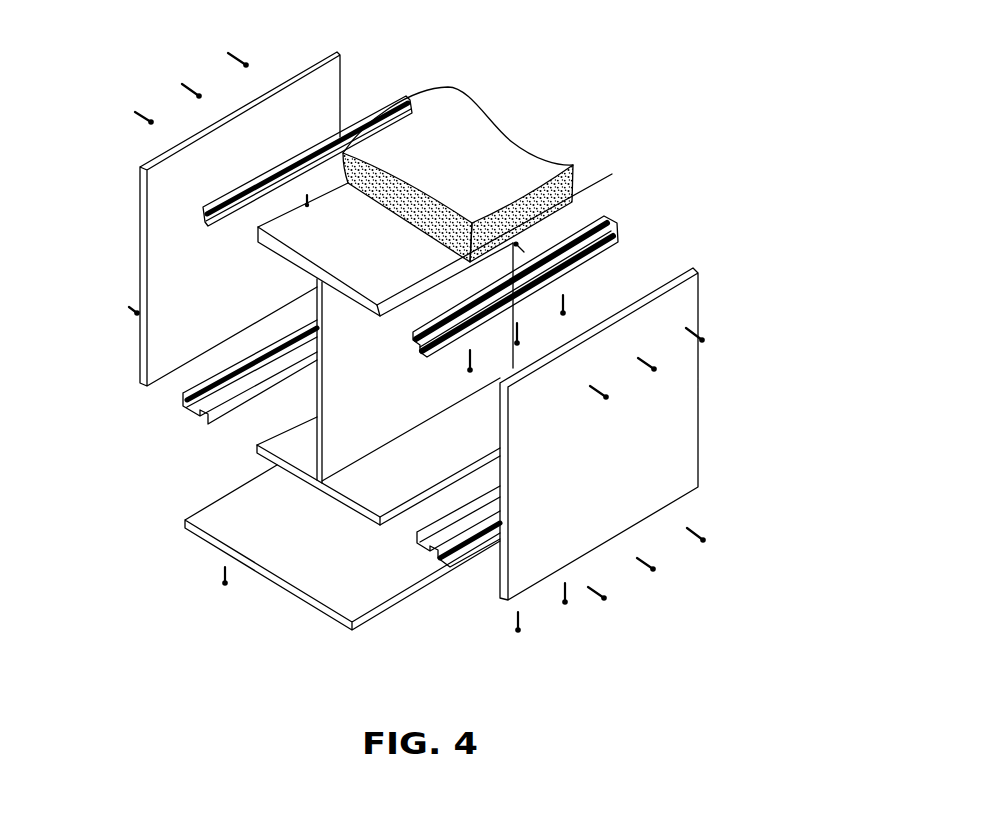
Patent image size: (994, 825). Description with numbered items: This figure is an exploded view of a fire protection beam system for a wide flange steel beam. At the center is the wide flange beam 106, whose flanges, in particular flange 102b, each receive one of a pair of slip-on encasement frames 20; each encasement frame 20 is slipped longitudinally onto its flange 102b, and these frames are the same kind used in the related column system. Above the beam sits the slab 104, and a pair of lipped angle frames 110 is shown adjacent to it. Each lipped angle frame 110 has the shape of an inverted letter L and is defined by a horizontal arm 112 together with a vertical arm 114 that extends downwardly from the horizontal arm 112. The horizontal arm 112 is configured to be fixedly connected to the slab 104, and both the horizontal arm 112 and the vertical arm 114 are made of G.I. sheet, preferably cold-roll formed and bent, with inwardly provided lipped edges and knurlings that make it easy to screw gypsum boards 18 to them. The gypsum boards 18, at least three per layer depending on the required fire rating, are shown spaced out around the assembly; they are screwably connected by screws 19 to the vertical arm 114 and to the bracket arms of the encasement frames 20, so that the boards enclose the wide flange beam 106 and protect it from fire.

The gypsum board 18 is at (137, 256).
The screw 19 is at (223, 585).
The slip-on encasement frame 20 is at (180, 408).
The flange 102b is at (345, 512).
The slab 104 is at (501, 132).
The wide flange beam 106 is at (612, 174).
The lipped angle frame 110 is at (492, 191).
The horizontal arm 112 is at (618, 222).
The vertical arm 114 is at (620, 230).